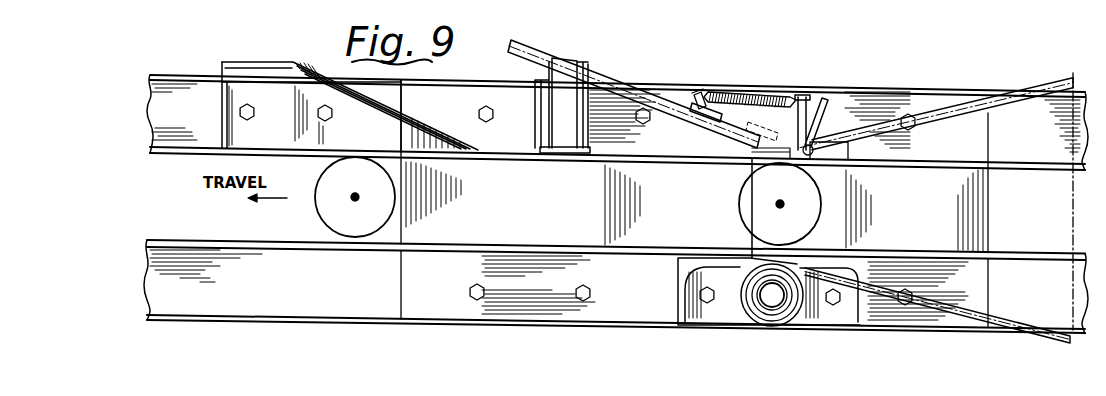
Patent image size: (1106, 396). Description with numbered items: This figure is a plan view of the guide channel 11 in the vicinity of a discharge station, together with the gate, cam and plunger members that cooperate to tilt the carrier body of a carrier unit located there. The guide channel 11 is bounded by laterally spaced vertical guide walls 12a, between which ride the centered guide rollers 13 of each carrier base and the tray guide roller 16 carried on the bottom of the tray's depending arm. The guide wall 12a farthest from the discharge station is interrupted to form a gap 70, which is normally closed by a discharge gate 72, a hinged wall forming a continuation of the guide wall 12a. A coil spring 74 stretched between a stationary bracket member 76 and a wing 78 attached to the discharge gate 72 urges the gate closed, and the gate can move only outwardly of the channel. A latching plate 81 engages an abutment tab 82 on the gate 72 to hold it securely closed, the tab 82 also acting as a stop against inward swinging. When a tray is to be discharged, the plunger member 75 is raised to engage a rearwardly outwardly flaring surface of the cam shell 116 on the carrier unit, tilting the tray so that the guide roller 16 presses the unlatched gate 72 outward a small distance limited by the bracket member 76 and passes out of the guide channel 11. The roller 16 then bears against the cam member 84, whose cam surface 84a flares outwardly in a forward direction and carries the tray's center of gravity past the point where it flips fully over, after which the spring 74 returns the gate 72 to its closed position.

The guide channel 11 is at (160, 167).
The guide wall 12a is at (958, 161).
The guide roller 13 is at (322, 224).
The guide roller 16 is at (820, 205).
The gap 70 is at (489, 156).
The discharge gate 72 is at (617, 92).
The coil spring 74 is at (756, 94).
The plunger member 75 is at (760, 322).
The bracket member 76 is at (696, 93).
The wing 78 is at (798, 98).
The latching plate 81 is at (563, 136).
The abutment tab 82 is at (552, 142).
The cam member 84 is at (219, 112).
The cam surface 84a is at (222, 70).
The cam shell 116 is at (1058, 76).